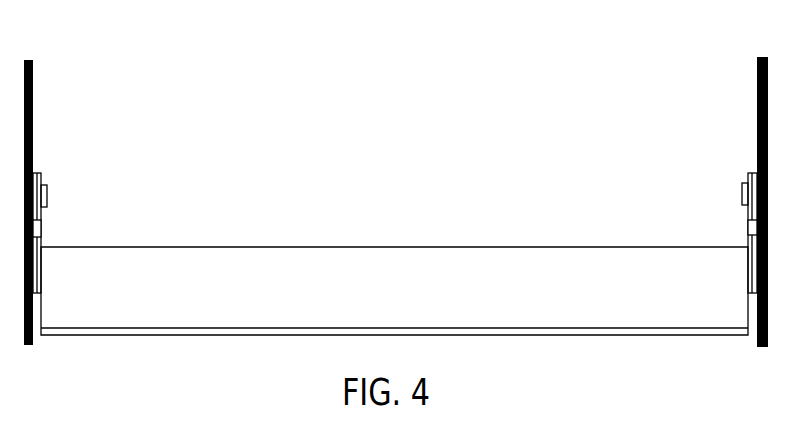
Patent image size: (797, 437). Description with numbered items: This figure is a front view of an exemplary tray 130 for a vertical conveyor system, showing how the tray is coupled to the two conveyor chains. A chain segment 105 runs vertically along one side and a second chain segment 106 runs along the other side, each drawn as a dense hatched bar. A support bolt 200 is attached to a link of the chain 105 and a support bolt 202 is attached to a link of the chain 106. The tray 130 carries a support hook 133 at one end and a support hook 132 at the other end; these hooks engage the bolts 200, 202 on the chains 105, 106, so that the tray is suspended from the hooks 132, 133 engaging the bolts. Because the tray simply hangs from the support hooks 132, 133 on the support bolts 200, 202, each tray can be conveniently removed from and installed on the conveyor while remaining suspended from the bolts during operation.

The chain 105 is at (34, 99).
The chain 106 is at (757, 96).
The tray 130 is at (253, 247).
The support hook 132 is at (748, 173).
The support hook 133 is at (37, 177).
The support bolt 200 is at (47, 198).
The support bolt 202 is at (741, 200).